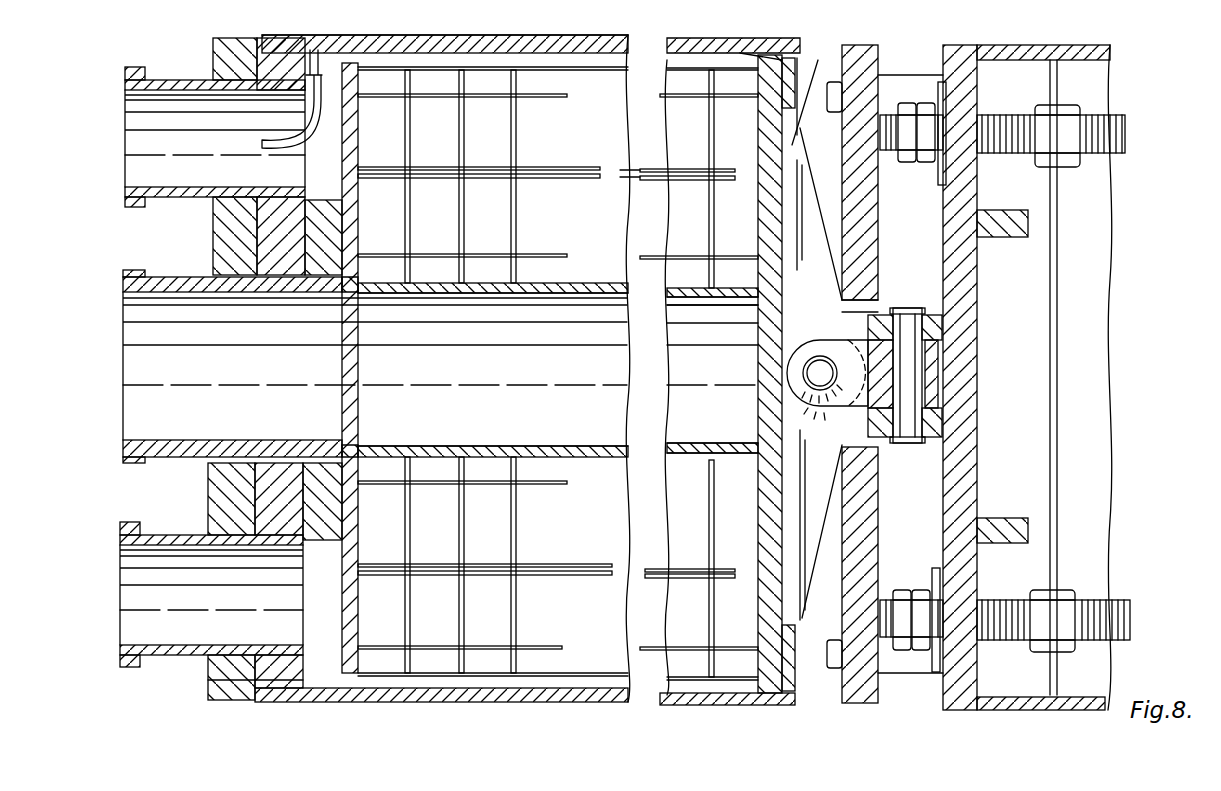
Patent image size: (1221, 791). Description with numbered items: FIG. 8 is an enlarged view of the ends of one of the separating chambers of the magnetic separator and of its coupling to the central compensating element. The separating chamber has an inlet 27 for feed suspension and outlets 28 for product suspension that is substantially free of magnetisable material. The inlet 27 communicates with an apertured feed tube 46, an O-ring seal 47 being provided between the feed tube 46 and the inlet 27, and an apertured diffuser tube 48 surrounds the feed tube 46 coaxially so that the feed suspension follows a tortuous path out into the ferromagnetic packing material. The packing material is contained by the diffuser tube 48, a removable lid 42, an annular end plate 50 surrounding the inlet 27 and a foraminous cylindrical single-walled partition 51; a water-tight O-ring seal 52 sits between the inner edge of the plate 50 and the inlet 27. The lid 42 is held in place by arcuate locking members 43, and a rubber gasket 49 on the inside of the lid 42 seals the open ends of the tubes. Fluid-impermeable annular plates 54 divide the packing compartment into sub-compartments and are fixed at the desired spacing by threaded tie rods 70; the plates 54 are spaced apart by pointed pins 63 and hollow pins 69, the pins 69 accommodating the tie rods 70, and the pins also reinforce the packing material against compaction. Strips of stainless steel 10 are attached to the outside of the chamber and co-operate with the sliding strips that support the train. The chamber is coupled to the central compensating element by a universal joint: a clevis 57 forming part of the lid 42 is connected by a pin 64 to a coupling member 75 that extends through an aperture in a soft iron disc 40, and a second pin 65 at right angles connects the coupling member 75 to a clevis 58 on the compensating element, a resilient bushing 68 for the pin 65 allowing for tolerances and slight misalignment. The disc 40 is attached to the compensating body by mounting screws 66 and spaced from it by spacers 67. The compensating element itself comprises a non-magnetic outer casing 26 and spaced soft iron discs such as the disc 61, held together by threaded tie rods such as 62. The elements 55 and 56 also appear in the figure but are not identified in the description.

The strips of stainless steel 10 is at (612, 37).
The outer cylindrical casing 26 is at (1088, 52).
The inlet 27 is at (140, 274).
The outlets 28 is at (140, 72).
The second soft iron disc 40 is at (860, 63).
The removable lid 42 is at (766, 669).
The arcuate locking members 43 is at (792, 684).
The feed tube 46 is at (598, 300).
The O-ring seal 47 is at (350, 441).
The diffuser tube 48 is at (626, 287).
The rubber gasket 49 is at (757, 366).
The annular end plate 50 is at (350, 218).
The foraminous cylindrical single-walled partition 51 is at (584, 70).
The O-ring seal 52 is at (340, 457).
The annular plates 54 is at (516, 220).
The hose 55 is at (308, 60).
The bottom block 56 is at (235, 680).
The clevis 57 is at (817, 326).
The clevis 58 is at (936, 423).
The disc 61 is at (1062, 82).
The threaded longitudinal tie rod 62 is at (1110, 142).
The pointed pins 63 is at (490, 97).
The pin 64 is at (818, 366).
The second pin 65 is at (906, 446).
The mounting screws 66 is at (830, 650).
The spacers 67 is at (892, 662).
The resilient bushing 68 is at (940, 372).
The hollow pins 69 is at (630, 168).
The threaded tie rods 70 is at (613, 176).
The coupling member 75 is at (813, 402).